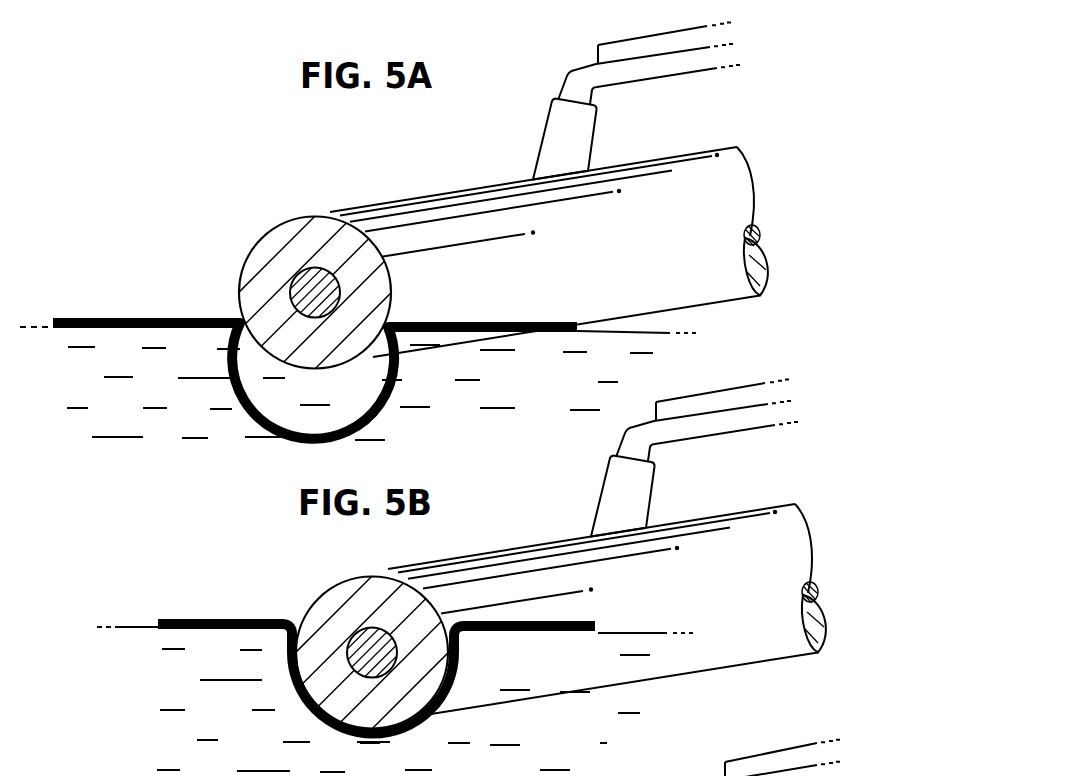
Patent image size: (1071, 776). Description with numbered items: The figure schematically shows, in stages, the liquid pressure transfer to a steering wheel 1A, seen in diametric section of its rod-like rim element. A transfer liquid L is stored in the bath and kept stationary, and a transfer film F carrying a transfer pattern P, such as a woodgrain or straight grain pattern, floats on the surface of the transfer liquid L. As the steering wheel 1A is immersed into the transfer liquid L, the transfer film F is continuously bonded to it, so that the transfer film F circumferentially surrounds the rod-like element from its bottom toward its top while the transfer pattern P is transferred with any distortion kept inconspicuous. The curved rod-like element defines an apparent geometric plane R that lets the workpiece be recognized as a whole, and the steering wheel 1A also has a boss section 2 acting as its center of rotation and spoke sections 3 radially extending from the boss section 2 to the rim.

In FIG. 5A, the steering wheel 1A is at (292, 227).
In FIG. 5B, the steering wheel 1A is at (347, 587).
In FIG. 5A, the boss section 2 is at (597, 53).
In FIG. 5B, the boss section 2 is at (665, 409).
In FIG. 5A, the spoke sections 3 is at (565, 123).
In FIG. 5B, the spoke sections 3 is at (624, 481).
In FIG. 5A, the transfer pattern P is at (146, 316).
In FIG. 5B, the transfer pattern P is at (220, 617).
In FIG. 5A, the transfer film F is at (203, 321).
In FIG. 5B, the transfer film F is at (275, 620).
In FIG. 5A, the transfer liquid L is at (262, 408).
In FIG. 5B, the transfer liquid L is at (254, 720).
In FIG. 5A, the apparent geometric plane R is at (709, 308).
In FIG. 5B, the apparent geometric plane R is at (745, 668).